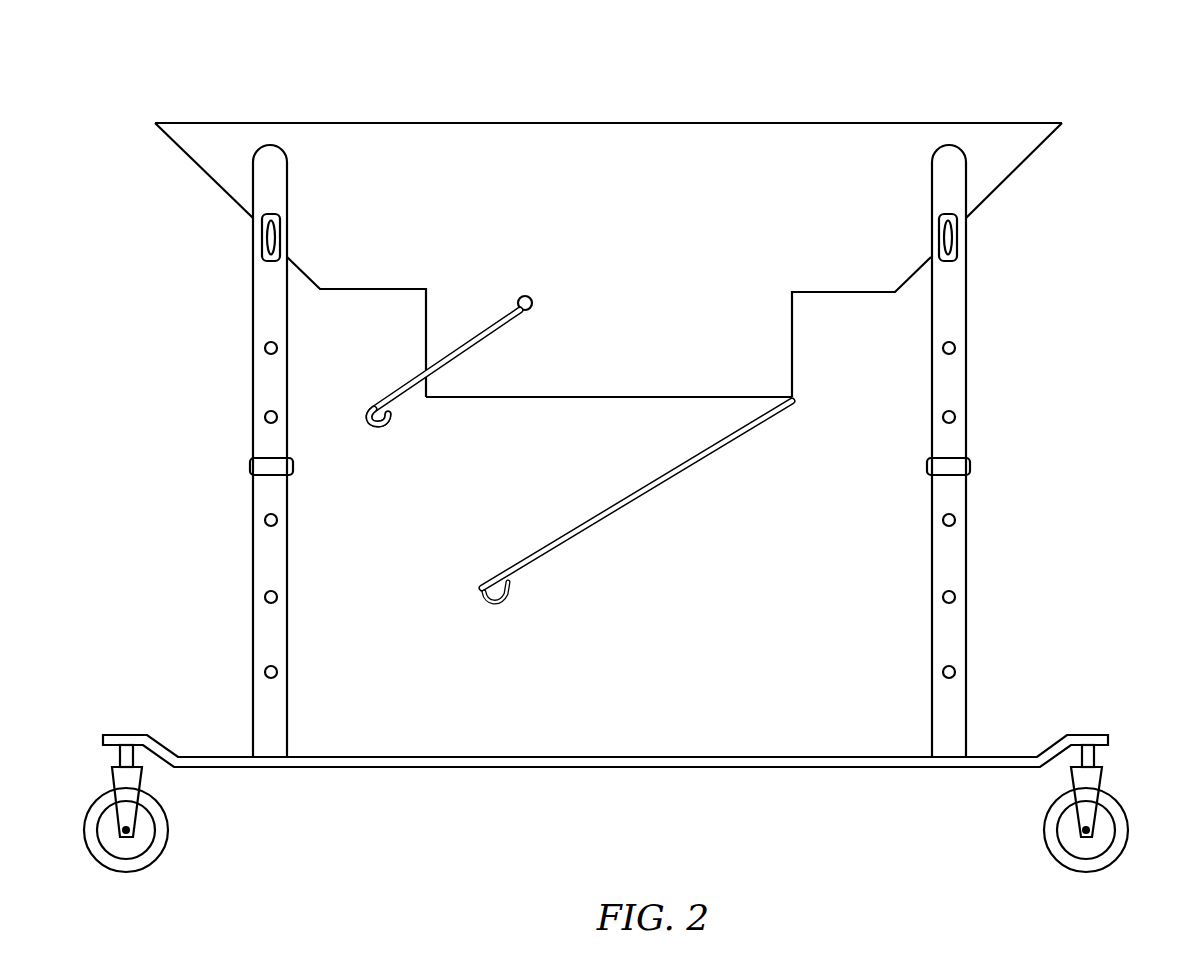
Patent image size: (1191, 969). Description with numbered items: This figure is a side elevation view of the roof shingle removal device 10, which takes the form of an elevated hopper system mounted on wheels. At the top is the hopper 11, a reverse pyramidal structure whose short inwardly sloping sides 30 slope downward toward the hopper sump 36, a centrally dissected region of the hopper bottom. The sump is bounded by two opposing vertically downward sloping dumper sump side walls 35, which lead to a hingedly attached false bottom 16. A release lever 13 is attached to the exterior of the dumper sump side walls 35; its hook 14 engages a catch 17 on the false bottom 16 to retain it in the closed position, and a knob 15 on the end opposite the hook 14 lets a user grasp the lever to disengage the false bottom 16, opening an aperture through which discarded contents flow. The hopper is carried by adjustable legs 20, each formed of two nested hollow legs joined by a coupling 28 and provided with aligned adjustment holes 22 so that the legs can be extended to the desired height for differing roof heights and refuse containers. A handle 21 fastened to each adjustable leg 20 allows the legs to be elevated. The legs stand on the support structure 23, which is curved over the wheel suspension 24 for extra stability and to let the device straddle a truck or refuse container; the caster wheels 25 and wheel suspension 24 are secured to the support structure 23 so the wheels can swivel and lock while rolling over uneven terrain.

The roof shingle removal device 10 is at (1100, 193).
The hopper 11 is at (280, 122).
The release lever 13 is at (418, 376).
The hook 14 is at (378, 422).
The knob 15 is at (528, 295).
The false bottom 16 is at (693, 465).
The catch 17 is at (494, 603).
The adjustable legs 20 is at (268, 627).
The handle 21 is at (268, 237).
The adjustment holes 22 is at (265, 351).
The support structure 23 is at (621, 761).
The wheel suspension 24 is at (118, 777).
The caster wheels 25 is at (159, 840).
The coupling 28 is at (255, 466).
The short inwardly sloping sides 30 is at (210, 180).
The dumper sump side walls 35 is at (427, 318).
The hopper sump 36 is at (549, 405).